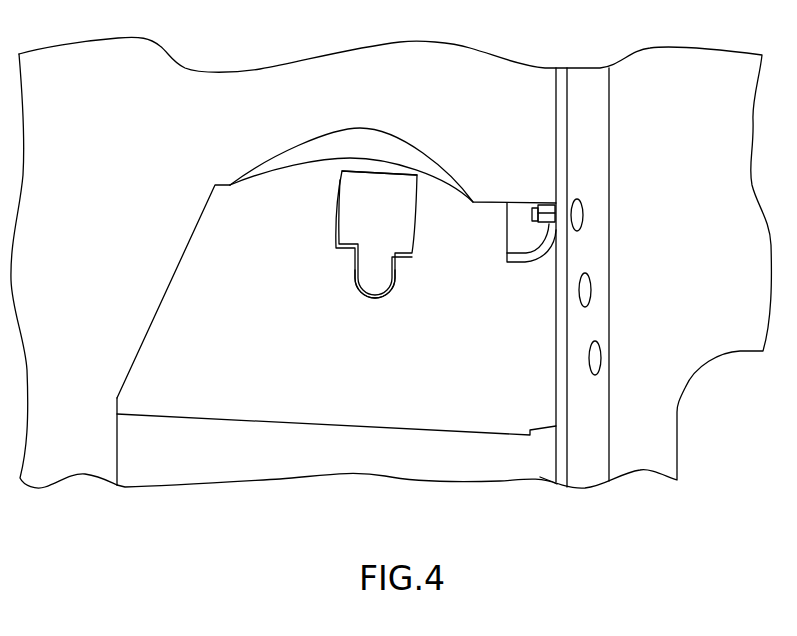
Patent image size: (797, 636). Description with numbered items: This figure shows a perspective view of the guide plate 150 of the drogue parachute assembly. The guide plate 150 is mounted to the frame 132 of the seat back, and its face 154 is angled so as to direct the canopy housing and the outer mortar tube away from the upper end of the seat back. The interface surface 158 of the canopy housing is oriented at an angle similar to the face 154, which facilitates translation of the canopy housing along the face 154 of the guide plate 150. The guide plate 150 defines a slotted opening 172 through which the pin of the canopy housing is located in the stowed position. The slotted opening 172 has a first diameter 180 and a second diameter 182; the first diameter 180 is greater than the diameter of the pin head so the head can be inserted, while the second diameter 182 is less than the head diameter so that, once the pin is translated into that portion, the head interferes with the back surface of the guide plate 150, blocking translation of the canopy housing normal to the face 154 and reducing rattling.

The frame 132 is at (153, 161).
The guide plate 150 is at (235, 293).
The face 154 is at (310, 346).
The interface surface 158 is at (582, 210).
The slotted opening 172 is at (375, 182).
The first diameter 180 is at (466, 216).
The second diameter 182 is at (451, 278).